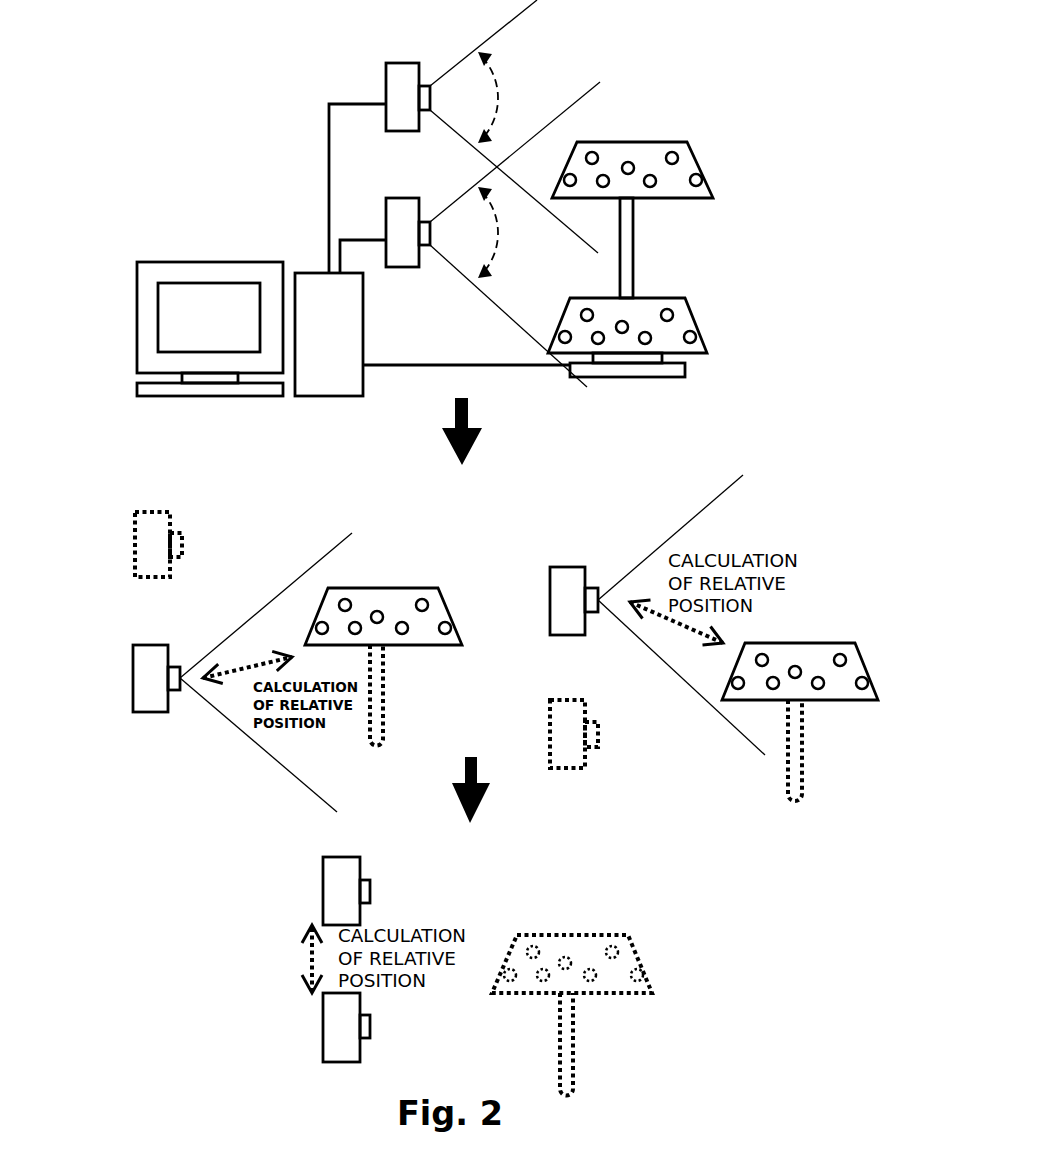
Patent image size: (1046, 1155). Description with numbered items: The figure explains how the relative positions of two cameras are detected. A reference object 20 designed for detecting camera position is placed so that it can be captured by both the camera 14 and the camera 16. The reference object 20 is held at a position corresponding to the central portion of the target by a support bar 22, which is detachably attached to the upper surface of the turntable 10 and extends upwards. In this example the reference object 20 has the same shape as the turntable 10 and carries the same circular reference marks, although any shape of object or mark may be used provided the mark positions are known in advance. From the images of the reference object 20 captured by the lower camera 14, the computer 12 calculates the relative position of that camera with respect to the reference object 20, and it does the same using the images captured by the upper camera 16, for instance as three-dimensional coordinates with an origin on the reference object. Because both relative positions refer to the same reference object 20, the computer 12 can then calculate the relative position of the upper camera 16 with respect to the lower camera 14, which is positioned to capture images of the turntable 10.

The turntable 10 is at (693, 313).
The computer 12 is at (285, 406).
The camera 14 is at (386, 232).
The camera 16 is at (386, 100).
The reference object 20 is at (576, 935).
The support bar 22 is at (633, 265).